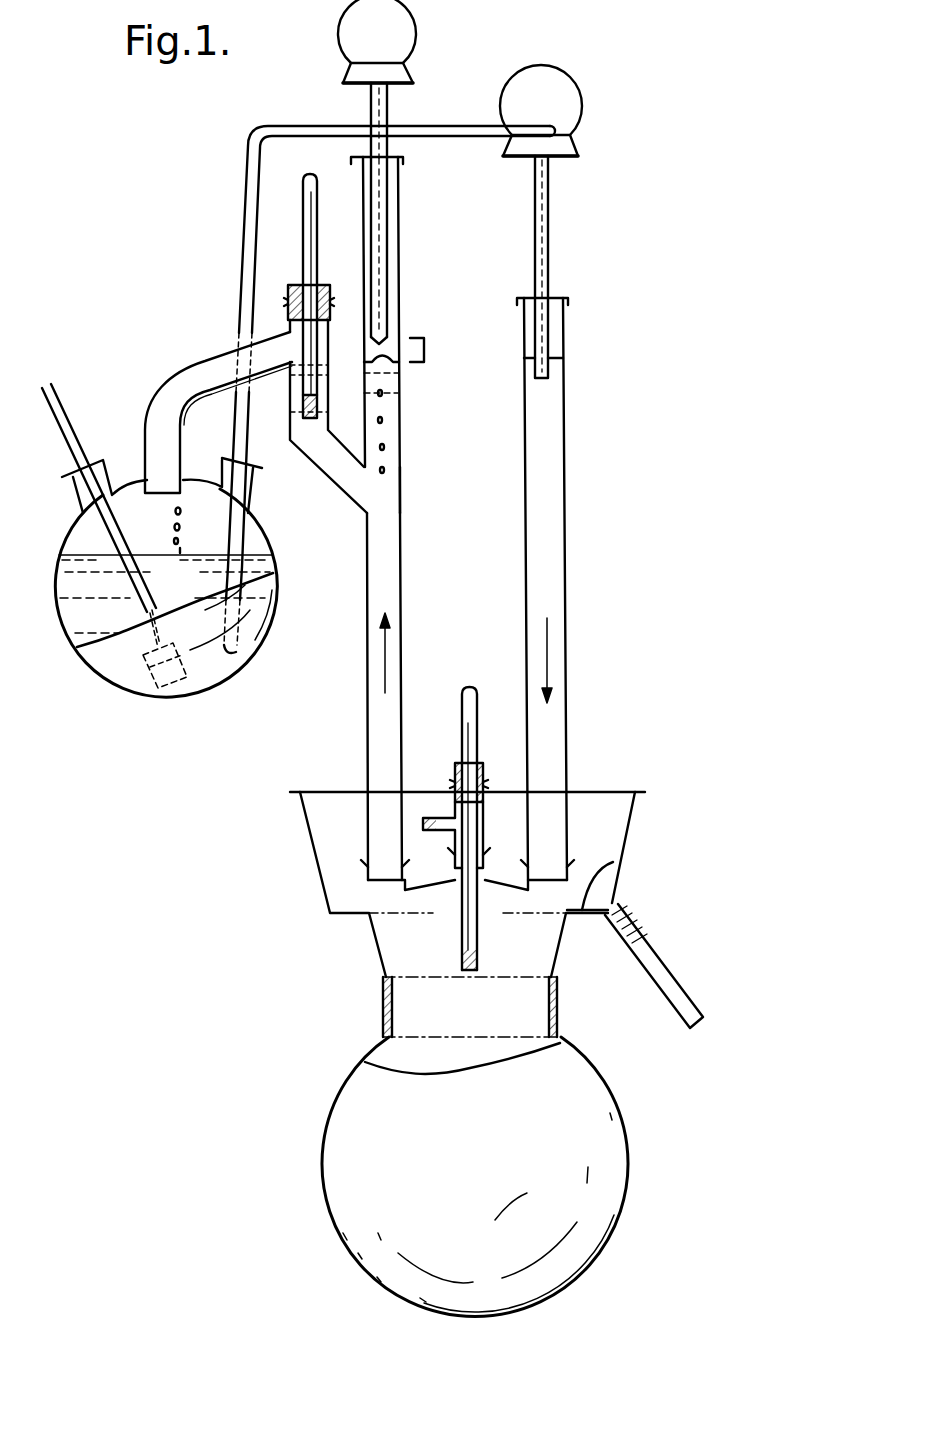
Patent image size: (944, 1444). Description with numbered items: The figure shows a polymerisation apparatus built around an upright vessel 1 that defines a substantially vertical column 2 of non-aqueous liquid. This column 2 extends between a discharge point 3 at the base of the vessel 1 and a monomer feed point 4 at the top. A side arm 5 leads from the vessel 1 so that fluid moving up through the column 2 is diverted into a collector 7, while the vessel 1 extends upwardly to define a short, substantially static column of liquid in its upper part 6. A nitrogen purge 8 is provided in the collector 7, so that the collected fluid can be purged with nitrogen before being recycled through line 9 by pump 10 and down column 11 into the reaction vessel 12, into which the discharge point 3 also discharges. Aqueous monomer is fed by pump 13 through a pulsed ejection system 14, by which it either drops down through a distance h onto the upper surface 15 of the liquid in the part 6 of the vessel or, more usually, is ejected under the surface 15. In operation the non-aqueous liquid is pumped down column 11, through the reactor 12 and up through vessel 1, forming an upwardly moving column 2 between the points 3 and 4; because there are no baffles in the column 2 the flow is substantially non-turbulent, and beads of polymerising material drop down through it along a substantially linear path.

The upright vessel 1 is at (403, 685).
The vertical column 2 is at (382, 598).
The discharge point 3 is at (383, 888).
The monomer feed point 4 is at (380, 510).
The side arm 5 is at (335, 470).
The part of the vessel 6 is at (400, 447).
The collector 7 is at (123, 675).
The nitrogen purge 8 is at (72, 432).
The line 9 is at (248, 197).
The pump 10 is at (562, 99).
The column 11 is at (566, 658).
The reaction vessel 12 is at (342, 1130).
The pump 13 is at (356, 47).
The pulsed ejection system 14 is at (383, 337).
The upper surface 15 is at (393, 362).
The distance h is at (426, 350).